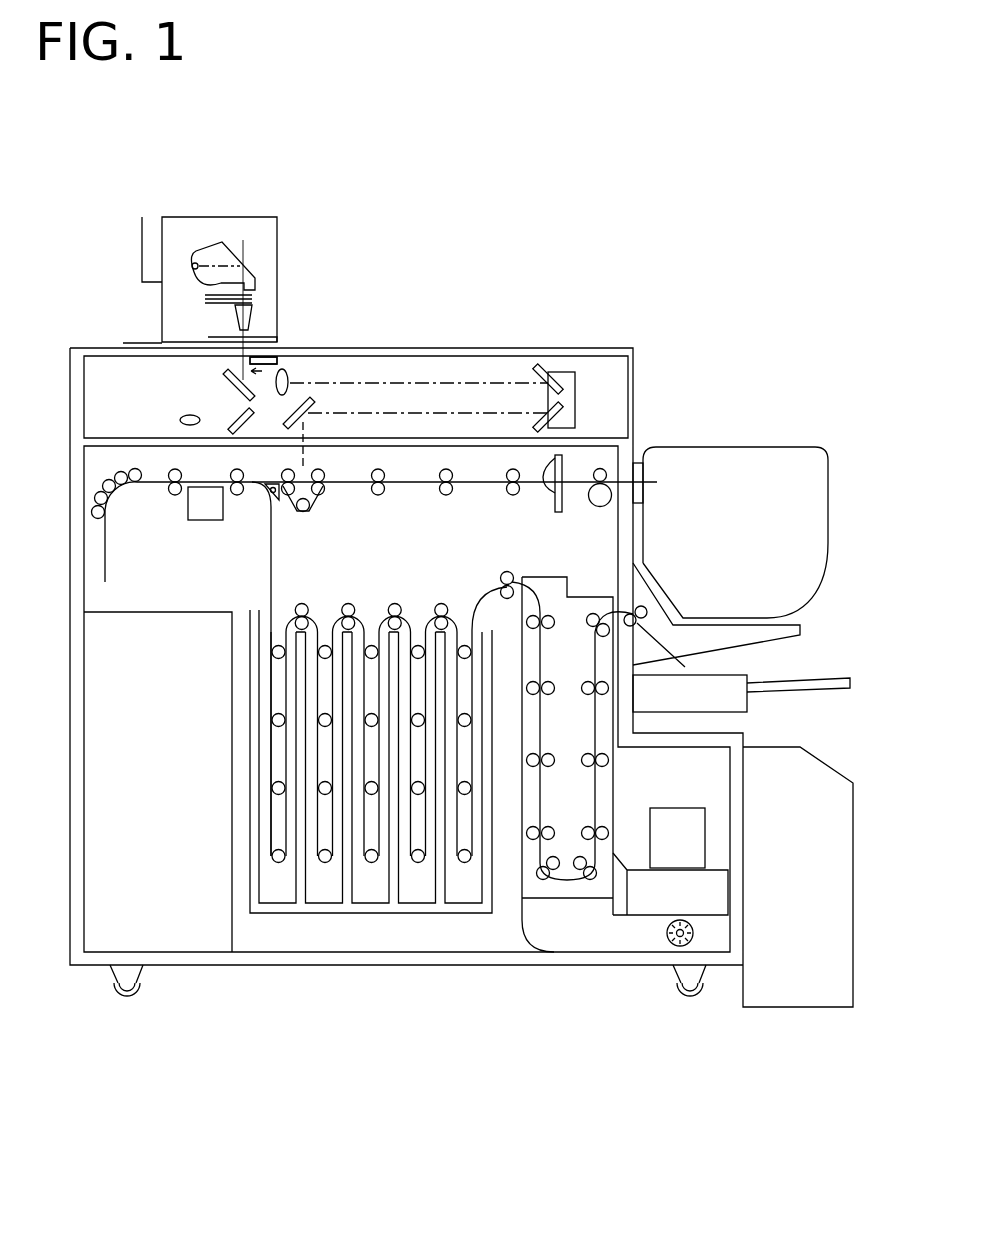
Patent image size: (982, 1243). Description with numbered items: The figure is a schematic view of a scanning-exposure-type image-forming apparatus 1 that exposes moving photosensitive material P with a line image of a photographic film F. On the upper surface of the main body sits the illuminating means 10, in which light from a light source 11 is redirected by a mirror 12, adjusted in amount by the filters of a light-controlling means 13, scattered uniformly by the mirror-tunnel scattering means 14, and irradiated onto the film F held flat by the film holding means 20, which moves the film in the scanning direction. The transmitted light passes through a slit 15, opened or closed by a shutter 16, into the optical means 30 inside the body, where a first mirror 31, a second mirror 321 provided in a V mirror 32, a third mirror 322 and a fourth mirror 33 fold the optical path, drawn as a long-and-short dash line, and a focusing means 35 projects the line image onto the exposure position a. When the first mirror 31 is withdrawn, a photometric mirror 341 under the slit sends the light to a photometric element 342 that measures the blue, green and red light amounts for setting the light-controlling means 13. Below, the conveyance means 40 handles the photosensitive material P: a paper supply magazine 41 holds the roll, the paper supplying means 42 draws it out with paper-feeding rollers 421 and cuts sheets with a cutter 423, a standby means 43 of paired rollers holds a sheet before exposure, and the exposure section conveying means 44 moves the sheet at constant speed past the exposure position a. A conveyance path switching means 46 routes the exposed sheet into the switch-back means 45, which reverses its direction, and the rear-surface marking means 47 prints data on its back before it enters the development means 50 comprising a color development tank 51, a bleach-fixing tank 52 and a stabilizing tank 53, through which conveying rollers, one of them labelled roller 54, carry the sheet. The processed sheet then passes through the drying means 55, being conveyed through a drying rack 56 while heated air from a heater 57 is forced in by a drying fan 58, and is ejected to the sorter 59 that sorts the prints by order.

The image-forming apparatus 1 is at (654, 307).
The illuminating means 10 is at (252, 275).
The light source 11 is at (254, 275).
The mirror 12 is at (252, 270).
The light-controlling means 13 is at (206, 303).
The scattering means 14 is at (278, 252).
The slit 15 is at (255, 335).
The shutter 16 is at (278, 360).
The film holding means 20 is at (268, 323).
The optical means 30 is at (397, 377).
The first mirror 31 is at (222, 380).
The V mirror 32 is at (608, 358).
The fourth mirror 33 is at (316, 405).
The focusing means 35 is at (292, 376).
The second mirror 321 is at (540, 368).
The third mirror 322 is at (575, 412).
The photometric mirror 341 is at (231, 418).
The photometric element 342 is at (180, 420).
The conveyance means 40 is at (375, 651).
The paper supply magazine 41 is at (758, 447).
The paper supplying means 42 is at (553, 519).
The paper-feeding rollers 421 is at (590, 488).
The cutter 423 is at (552, 490).
The standby means 43 is at (405, 490).
The exposure section conveying means 44 is at (312, 467).
The switch-back means 45 is at (128, 497).
The conveyance path switching means 46 is at (267, 493).
The rear-surface marking means 47 is at (205, 520).
The development means 50 is at (378, 806).
The color development tank 51 is at (277, 890).
The bleach-fixing tank 52 is at (323, 888).
The stabilizing tank 53 is at (370, 898).
The conveyance roller 54 is at (276, 645).
The drying means 55 is at (710, 888).
The drying rack 56 is at (567, 890).
The heater 57 is at (680, 850).
The fan 58 is at (678, 946).
The sorter 59 is at (760, 670).
The photographic film F is at (137, 343).
The photosensitive material P is at (467, 485).
The exposure position a is at (309, 505).